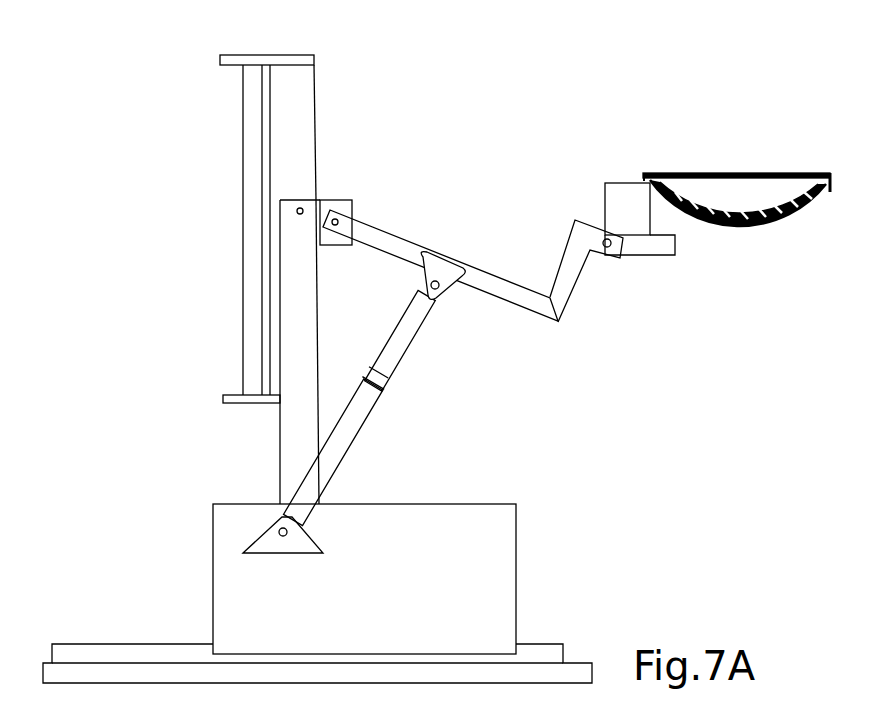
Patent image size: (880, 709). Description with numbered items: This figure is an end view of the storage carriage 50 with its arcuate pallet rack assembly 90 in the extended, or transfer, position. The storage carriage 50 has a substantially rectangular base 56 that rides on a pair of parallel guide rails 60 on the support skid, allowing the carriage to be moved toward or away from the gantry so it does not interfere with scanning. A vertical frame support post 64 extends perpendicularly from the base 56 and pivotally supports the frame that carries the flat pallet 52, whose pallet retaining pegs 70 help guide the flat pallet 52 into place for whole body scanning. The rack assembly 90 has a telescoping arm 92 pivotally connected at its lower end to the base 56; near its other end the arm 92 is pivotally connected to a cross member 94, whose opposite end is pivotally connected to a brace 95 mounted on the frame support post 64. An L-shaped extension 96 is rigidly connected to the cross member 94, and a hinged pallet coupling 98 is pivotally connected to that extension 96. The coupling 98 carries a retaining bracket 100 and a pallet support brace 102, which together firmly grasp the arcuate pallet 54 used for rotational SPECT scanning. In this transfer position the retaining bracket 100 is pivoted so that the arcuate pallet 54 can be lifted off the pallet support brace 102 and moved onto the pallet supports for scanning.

The storage carriage 50 is at (124, 263).
The pallet 52 is at (245, 167).
The arcuate pallet 54 is at (740, 226).
The base 56 is at (503, 595).
The guide rails 60 is at (548, 650).
The vertical frame support post 64 is at (303, 232).
The pallet retaining pegs 70 is at (228, 58).
The arcuate pallet rack assembly 90 is at (614, 84).
The telescoping arm 92 is at (298, 487).
The cross member 94 is at (390, 243).
The brace 95 is at (350, 203).
The L-shaped extension 96 is at (565, 272).
The hinged pallet coupling 98 is at (628, 203).
The retaining bracket 100 is at (742, 172).
The pallet support brace 102 is at (763, 221).